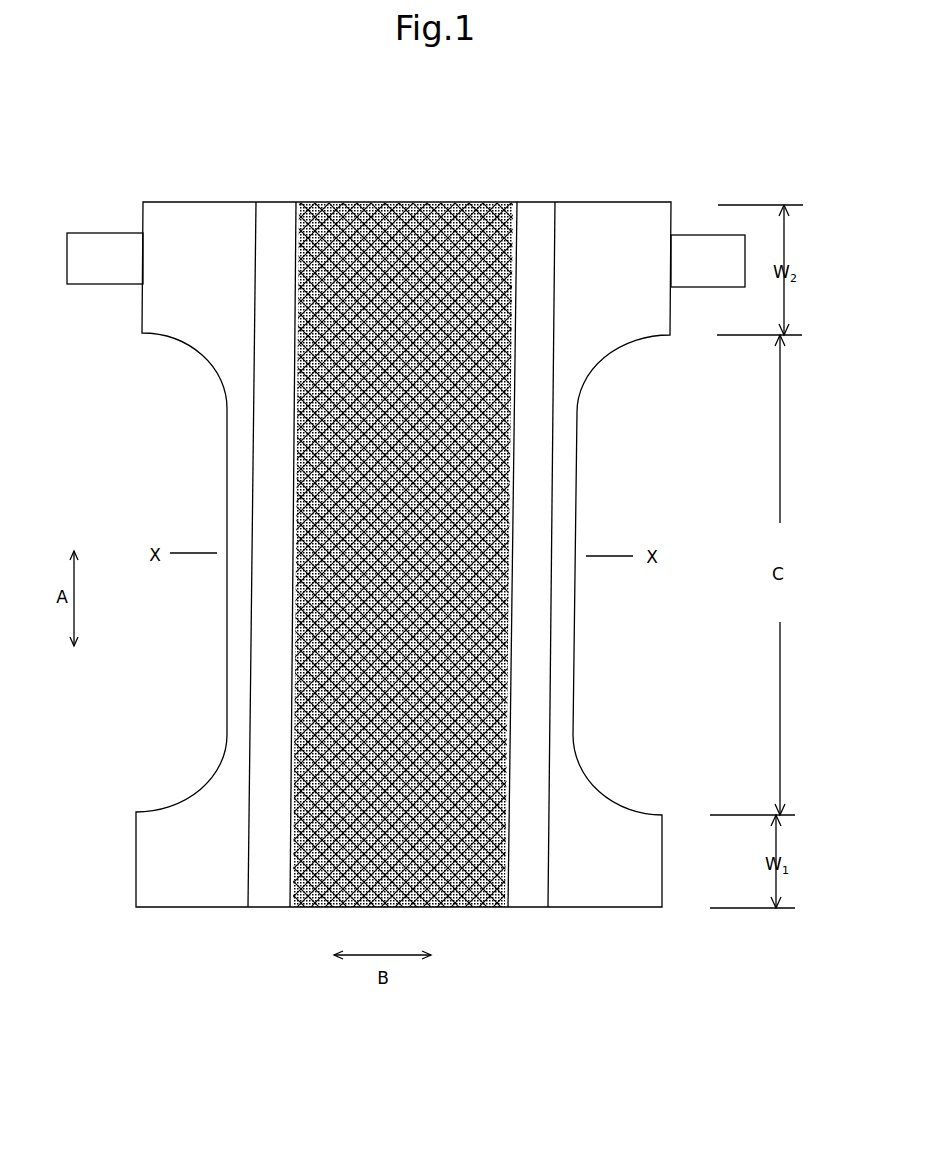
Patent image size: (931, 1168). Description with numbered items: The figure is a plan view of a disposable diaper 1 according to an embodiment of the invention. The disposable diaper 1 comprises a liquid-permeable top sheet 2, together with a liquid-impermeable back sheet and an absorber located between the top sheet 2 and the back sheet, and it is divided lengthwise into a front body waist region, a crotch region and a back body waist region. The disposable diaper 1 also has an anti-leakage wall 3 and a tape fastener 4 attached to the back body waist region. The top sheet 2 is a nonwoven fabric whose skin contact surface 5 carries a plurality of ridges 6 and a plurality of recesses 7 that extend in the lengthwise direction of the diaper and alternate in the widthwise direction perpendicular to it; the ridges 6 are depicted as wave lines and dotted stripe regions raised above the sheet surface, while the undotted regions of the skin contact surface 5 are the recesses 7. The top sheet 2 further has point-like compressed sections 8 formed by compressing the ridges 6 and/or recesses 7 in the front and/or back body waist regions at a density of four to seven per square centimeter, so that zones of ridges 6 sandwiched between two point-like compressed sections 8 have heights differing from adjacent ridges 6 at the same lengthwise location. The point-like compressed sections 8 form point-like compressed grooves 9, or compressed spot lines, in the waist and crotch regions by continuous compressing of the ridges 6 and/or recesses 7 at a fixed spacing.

The disposable diaper 1 is at (185, 144).
The top sheet 2 is at (509, 193).
The anti-leakage wall 3 is at (265, 890).
The tape fastener 4 is at (86, 245).
The skin contact surface 5 is at (513, 257).
The ridges 6 is at (304, 195).
The recesses 7 is at (320, 195).
The point-like compressed sections 8 is at (377, 218).
The point-like compressed grooves 9 is at (302, 271).